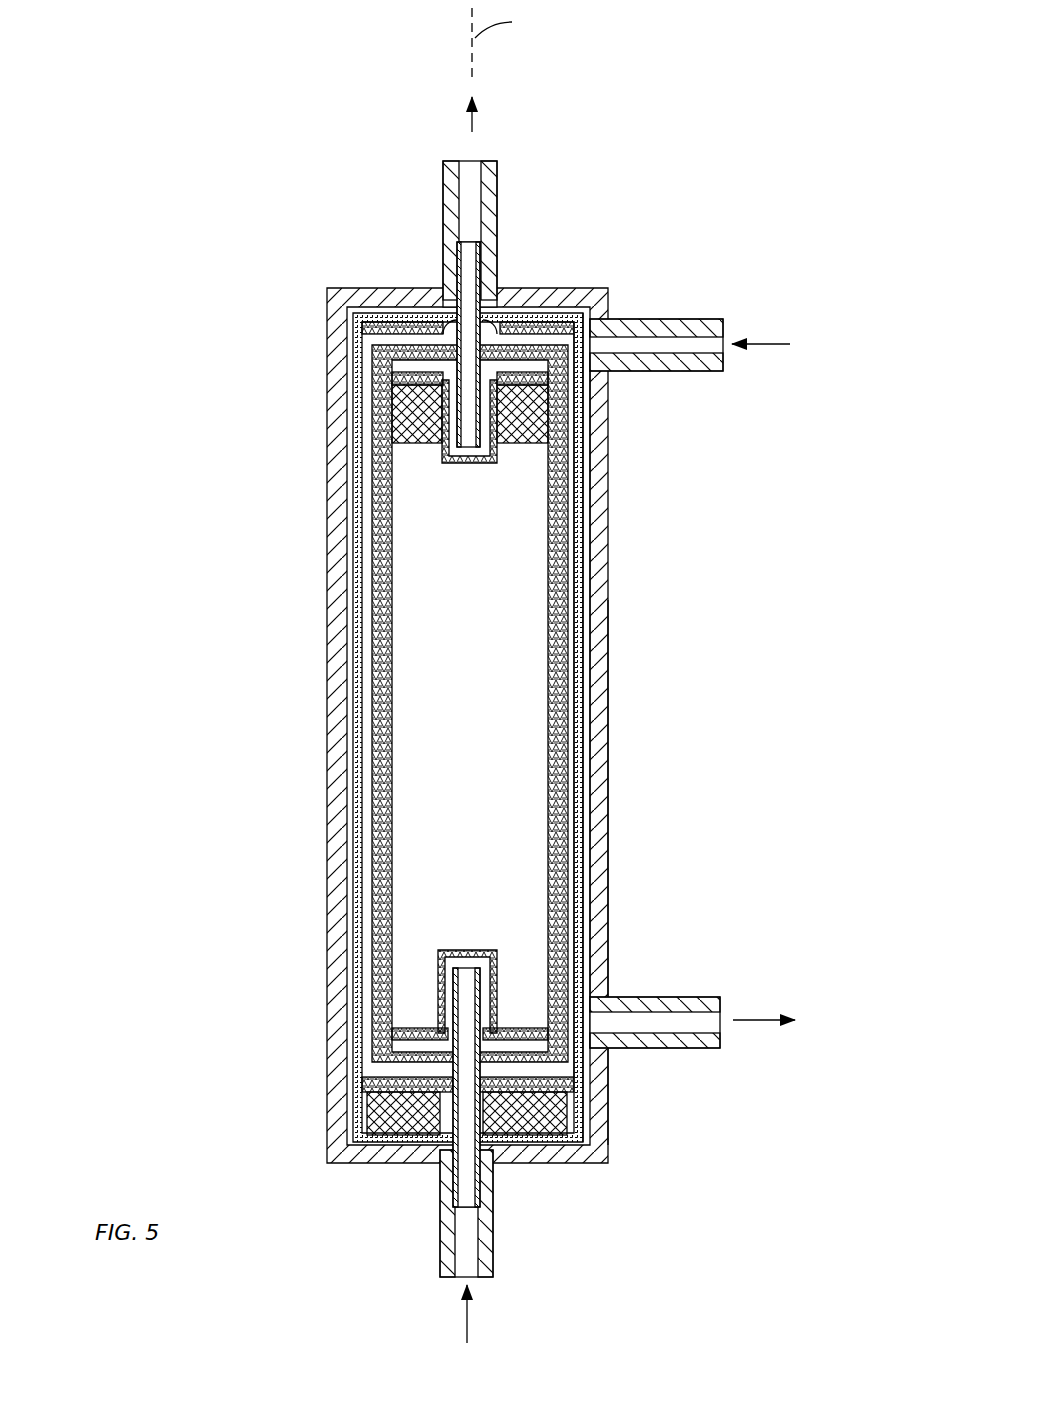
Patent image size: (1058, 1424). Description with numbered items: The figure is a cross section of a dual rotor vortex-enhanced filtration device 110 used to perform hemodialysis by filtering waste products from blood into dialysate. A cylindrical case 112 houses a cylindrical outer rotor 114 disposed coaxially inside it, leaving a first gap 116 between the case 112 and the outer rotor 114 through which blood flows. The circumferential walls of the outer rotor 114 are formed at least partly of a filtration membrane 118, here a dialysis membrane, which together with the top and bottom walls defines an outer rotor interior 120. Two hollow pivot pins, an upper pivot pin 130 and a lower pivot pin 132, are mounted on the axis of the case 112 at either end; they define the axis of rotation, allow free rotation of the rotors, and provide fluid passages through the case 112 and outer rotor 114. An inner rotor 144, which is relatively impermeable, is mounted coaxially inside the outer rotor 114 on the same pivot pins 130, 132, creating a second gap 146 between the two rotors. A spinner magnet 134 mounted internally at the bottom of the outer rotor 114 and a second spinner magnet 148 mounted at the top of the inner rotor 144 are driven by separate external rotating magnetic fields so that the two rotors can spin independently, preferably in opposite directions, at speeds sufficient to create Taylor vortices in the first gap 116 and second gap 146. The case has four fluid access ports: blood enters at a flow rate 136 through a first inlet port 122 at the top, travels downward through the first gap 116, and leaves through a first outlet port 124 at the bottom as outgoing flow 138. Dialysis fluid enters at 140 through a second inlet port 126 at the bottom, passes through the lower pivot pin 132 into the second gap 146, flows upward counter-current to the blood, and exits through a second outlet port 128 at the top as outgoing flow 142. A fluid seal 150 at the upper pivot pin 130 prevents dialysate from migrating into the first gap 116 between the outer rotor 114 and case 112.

The filtration device 110 is at (535, 675).
The cylindrical case 112 is at (327, 502).
The outer rotor 114 is at (357, 787).
The first gap 116 is at (585, 700).
The filtration membrane 118 is at (583, 560).
The outer rotor interior 120 is at (567, 350).
The first inlet port 122 is at (662, 318).
The first outlet port 124 is at (677, 995).
The second inlet port 126 is at (438, 1282).
The second outlet port 128 is at (498, 156).
The upper pivot pin 130 is at (481, 262).
The lower pivot pin 132 is at (480, 1172).
The spinner magnet 134 is at (378, 1110).
The blood flow rate 136 is at (773, 343).
The outlet flow arrow 138 is at (752, 1020).
The dialysis fluid entry 140 is at (468, 1325).
The outlet flow arrow 142 is at (474, 130).
The inner rotor 144 is at (373, 598).
The second gap 146 is at (575, 484).
The second spinner magnet 148 is at (415, 410).
The fluid seal 150 is at (445, 317).